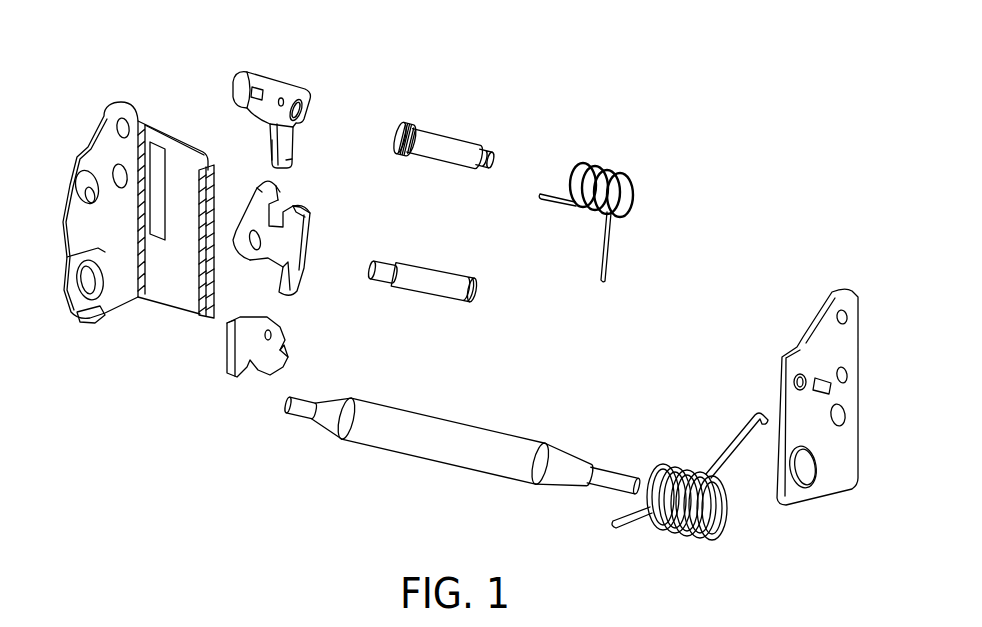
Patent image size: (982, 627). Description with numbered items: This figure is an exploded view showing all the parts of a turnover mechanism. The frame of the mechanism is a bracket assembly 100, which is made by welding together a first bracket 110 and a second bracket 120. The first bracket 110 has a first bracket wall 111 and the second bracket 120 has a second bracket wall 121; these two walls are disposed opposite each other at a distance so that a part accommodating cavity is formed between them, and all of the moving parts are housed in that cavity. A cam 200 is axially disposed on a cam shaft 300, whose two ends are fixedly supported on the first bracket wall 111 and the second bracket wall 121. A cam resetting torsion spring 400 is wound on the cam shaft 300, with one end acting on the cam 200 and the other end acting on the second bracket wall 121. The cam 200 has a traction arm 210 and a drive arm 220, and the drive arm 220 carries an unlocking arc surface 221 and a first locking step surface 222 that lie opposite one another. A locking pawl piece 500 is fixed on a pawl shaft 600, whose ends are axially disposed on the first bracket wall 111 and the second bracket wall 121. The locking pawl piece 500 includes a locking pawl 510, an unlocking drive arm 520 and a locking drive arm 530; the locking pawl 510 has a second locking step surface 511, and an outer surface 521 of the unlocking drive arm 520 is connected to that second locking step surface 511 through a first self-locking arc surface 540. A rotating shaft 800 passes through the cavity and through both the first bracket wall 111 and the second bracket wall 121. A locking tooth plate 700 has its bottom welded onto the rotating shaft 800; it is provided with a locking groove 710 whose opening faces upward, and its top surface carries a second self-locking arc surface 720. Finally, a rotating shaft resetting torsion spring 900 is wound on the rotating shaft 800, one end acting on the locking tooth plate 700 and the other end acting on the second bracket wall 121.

The bracket assembly 100 is at (121, 100).
The first bracket 110 is at (104, 118).
The first bracket wall 111 is at (95, 142).
The second bracket 120 is at (850, 290).
The second bracket wall 121 is at (850, 347).
The cam 200 is at (297, 76).
The traction arm 210 is at (264, 76).
The drive arm 220 is at (297, 137).
The unlocking arc surface 221 is at (270, 147).
The first locking step surface 222 is at (292, 163).
The cam shaft 300 is at (445, 145).
The cam resetting torsion spring 400 is at (609, 165).
The locking pawl piece 500 is at (312, 248).
The locking pawl 510 is at (290, 283).
The second locking step surface 511 is at (278, 285).
The unlocking drive arm 520 is at (250, 210).
The outer surface 521 is at (240, 208).
The locking drive arm 530 is at (300, 210).
The first self-locking arc surface 540 is at (205, 275).
The pawl shaft 600 is at (415, 280).
The locking tooth plate 700 is at (245, 343).
The locking groove 710 is at (284, 352).
The second self-locking arc surface 720 is at (225, 318).
The rotating shaft 800 is at (490, 445).
The rotating shaft resetting torsion spring 900 is at (690, 465).